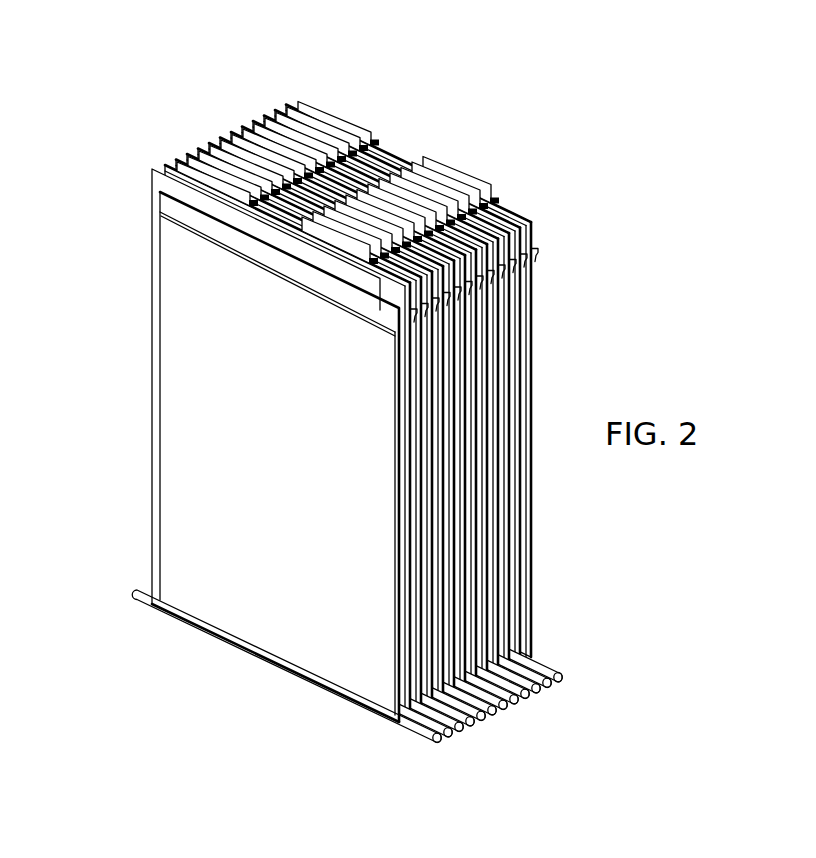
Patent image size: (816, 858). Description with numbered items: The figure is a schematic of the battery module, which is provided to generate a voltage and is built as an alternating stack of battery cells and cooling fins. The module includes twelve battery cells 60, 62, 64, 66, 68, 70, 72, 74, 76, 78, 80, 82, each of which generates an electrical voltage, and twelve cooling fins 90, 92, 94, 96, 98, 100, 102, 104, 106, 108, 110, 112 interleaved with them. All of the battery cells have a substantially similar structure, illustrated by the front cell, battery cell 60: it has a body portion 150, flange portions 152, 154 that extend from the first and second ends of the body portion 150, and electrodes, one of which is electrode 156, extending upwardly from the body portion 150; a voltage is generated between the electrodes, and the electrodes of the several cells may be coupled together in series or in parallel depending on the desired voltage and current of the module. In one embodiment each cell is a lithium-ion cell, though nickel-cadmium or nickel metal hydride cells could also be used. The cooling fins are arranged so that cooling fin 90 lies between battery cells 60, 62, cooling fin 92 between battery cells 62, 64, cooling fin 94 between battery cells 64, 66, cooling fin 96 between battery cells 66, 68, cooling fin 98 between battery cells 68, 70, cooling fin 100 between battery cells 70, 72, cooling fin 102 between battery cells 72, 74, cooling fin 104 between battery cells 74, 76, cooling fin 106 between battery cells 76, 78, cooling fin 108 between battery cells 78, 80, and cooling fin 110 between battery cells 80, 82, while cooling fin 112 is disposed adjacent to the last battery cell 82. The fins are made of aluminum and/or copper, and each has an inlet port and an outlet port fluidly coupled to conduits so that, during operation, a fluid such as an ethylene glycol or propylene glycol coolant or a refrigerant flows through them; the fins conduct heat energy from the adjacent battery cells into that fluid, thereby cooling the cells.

The battery cell 60 is at (165, 160).
The battery cell 62 is at (175, 151).
The battery cell 64 is at (186, 143).
The battery cell 66 is at (207, 131).
The battery cell 68 is at (215, 137).
The battery cell 70 is at (232, 132).
The battery cell 72 is at (244, 126).
The battery cell 74 is at (262, 120).
The battery cell 76 is at (279, 112).
The battery cell 78 is at (304, 122).
The battery cell 80 is at (329, 112).
The battery cell 82 is at (347, 112).
The cooling fin 90 is at (413, 740).
The cooling fin 92 is at (437, 755).
The cooling fin 94 is at (457, 738).
The cooling fin 96 is at (478, 732).
The cooling fin 98 is at (500, 716).
The cooling fin 100 is at (512, 710).
The cooling fin 102 is at (524, 704).
The cooling fin 104 is at (536, 699).
The cooling fin 106 is at (547, 693).
The cooling fin 108 is at (558, 688).
The cooling fin 110 is at (577, 687).
The cooling fin 112 is at (537, 660).
The body portion 150 is at (158, 488).
The flange portion 152 is at (152, 422).
The flange portion 154 is at (407, 678).
The electrode 156 is at (165, 182).